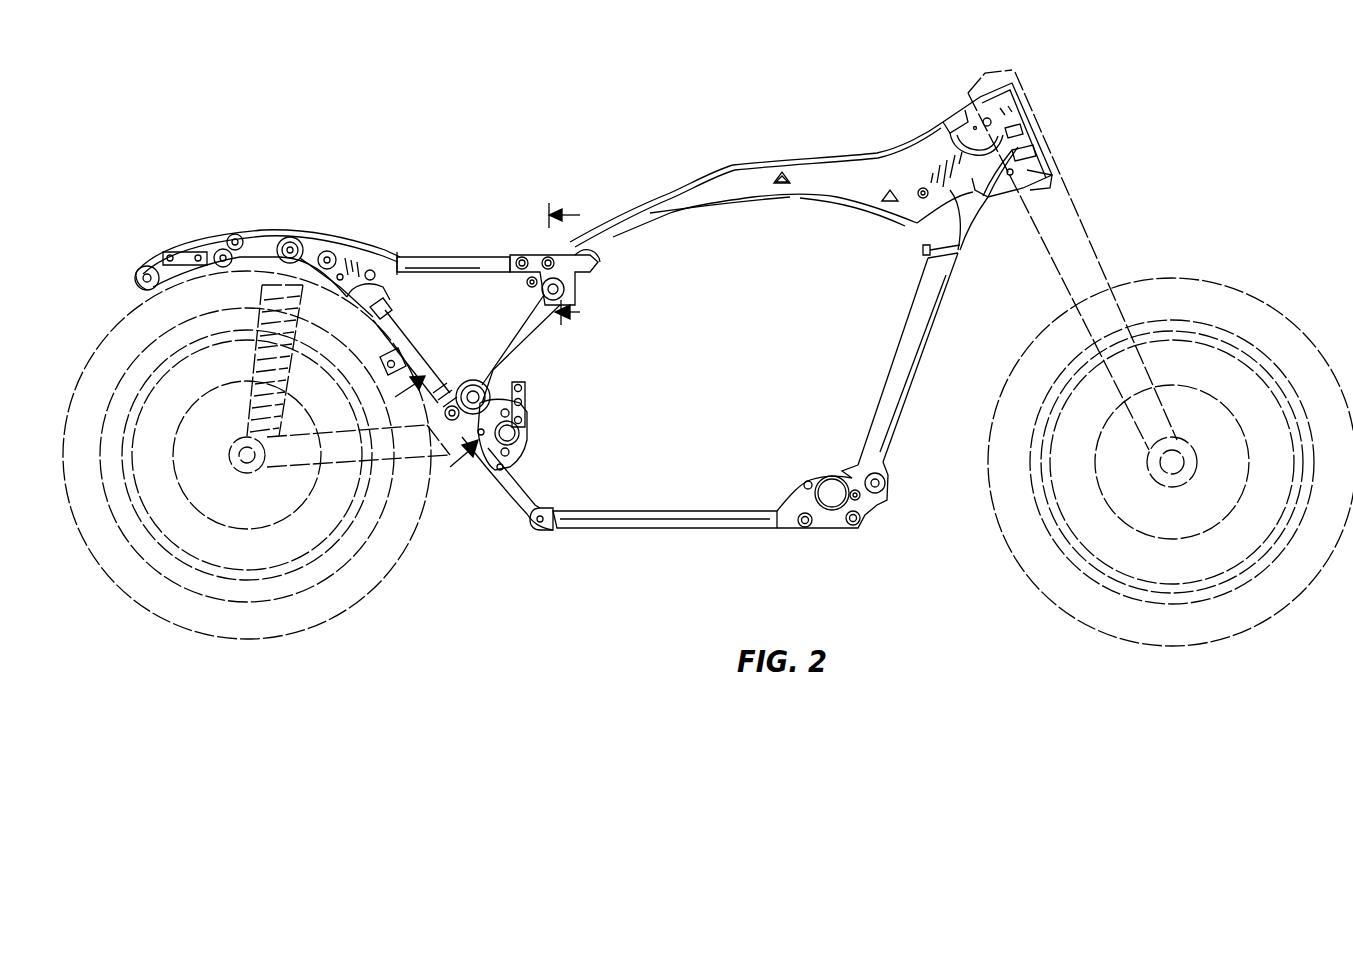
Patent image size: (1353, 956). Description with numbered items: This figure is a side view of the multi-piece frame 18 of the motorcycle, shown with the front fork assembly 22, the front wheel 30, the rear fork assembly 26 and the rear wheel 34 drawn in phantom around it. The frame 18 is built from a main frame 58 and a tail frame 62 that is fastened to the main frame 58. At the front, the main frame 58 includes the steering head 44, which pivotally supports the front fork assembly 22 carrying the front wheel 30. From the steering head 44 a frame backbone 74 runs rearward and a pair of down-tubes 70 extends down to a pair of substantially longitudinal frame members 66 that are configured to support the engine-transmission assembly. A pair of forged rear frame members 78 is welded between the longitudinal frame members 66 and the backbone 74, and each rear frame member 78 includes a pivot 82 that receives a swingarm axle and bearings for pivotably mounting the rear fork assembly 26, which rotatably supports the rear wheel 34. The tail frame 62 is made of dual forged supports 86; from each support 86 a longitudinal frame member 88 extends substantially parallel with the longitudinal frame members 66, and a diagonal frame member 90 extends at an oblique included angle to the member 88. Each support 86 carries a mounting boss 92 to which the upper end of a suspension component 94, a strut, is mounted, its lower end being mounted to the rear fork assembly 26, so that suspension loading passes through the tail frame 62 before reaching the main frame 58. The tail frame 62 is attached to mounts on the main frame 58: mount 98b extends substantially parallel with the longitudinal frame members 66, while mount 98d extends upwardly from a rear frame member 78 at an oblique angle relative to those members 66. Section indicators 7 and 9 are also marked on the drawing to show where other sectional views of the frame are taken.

The multi-piece frame 18 is at (471, 112).
The front fork assembly 22 is at (1083, 224).
The rear fork assembly 26 is at (360, 505).
The front wheel 30 is at (1305, 332).
The rear wheel 34 is at (333, 600).
The steering head 44 is at (1025, 138).
The main frame 58 is at (847, 140).
The tail frame 62 is at (439, 228).
The longitudinal frame members 66 is at (671, 520).
The down-tubes 70 is at (908, 350).
The frame backbone 74 is at (835, 187).
The rear frame members 78 is at (545, 345).
The pivot 82 is at (520, 440).
The supports 86 is at (256, 240).
The longitudinal frame member 88 is at (481, 250).
The diagonal frame member 90 is at (405, 338).
The mounting boss 92 is at (305, 245).
The suspension component 94 is at (253, 370).
The mount 98b is at (531, 250).
The mount 98d is at (525, 403).
The section line 7 is at (575, 263).
The section line 9 is at (430, 434).